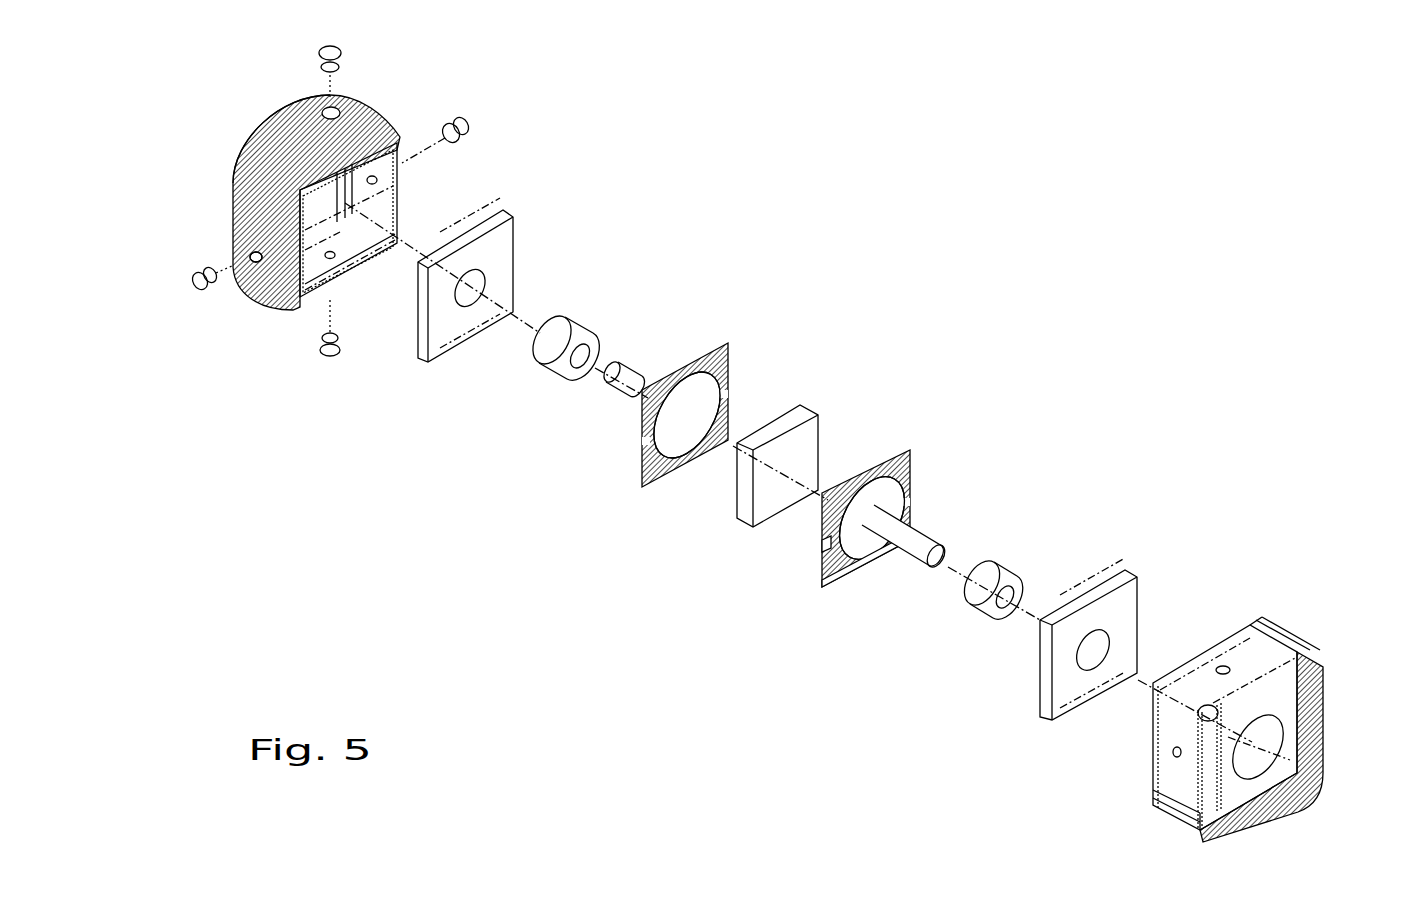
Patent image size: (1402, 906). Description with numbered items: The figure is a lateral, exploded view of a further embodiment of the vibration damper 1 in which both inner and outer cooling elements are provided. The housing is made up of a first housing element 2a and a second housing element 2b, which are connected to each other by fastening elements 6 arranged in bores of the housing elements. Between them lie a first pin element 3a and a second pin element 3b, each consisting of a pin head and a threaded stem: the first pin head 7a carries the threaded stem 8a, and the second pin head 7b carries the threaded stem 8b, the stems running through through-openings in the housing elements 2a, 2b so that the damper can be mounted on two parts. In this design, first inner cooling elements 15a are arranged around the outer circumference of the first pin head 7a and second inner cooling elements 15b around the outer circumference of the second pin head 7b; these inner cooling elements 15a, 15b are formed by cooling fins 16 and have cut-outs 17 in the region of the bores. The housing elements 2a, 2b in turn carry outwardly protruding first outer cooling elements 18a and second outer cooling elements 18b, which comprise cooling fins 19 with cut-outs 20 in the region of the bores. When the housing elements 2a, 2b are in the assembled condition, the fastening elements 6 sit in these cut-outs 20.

The vibration damper 1 is at (1062, 246).
The first housing element 2a is at (375, 203).
The second housing element 2b is at (1243, 657).
The first pin element 3a is at (696, 393).
The second pin element 3b is at (892, 539).
The fastening elements 6 is at (196, 286).
The first pin head 7a is at (706, 394).
The second pin head 7b is at (893, 505).
The threaded stem 8a is at (634, 382).
The threaded stem 8b is at (906, 546).
The first inner cooling elements 15a is at (724, 345).
The second inner cooling elements 15b is at (913, 465).
The cooling fins 16 is at (822, 588).
The cut-outs 17 is at (824, 549).
The first outer cooling elements 18a is at (250, 201).
The second outer cooling elements 18b is at (1316, 672).
The cooling fins 19 is at (258, 168).
The cut-outs 20 is at (262, 262).